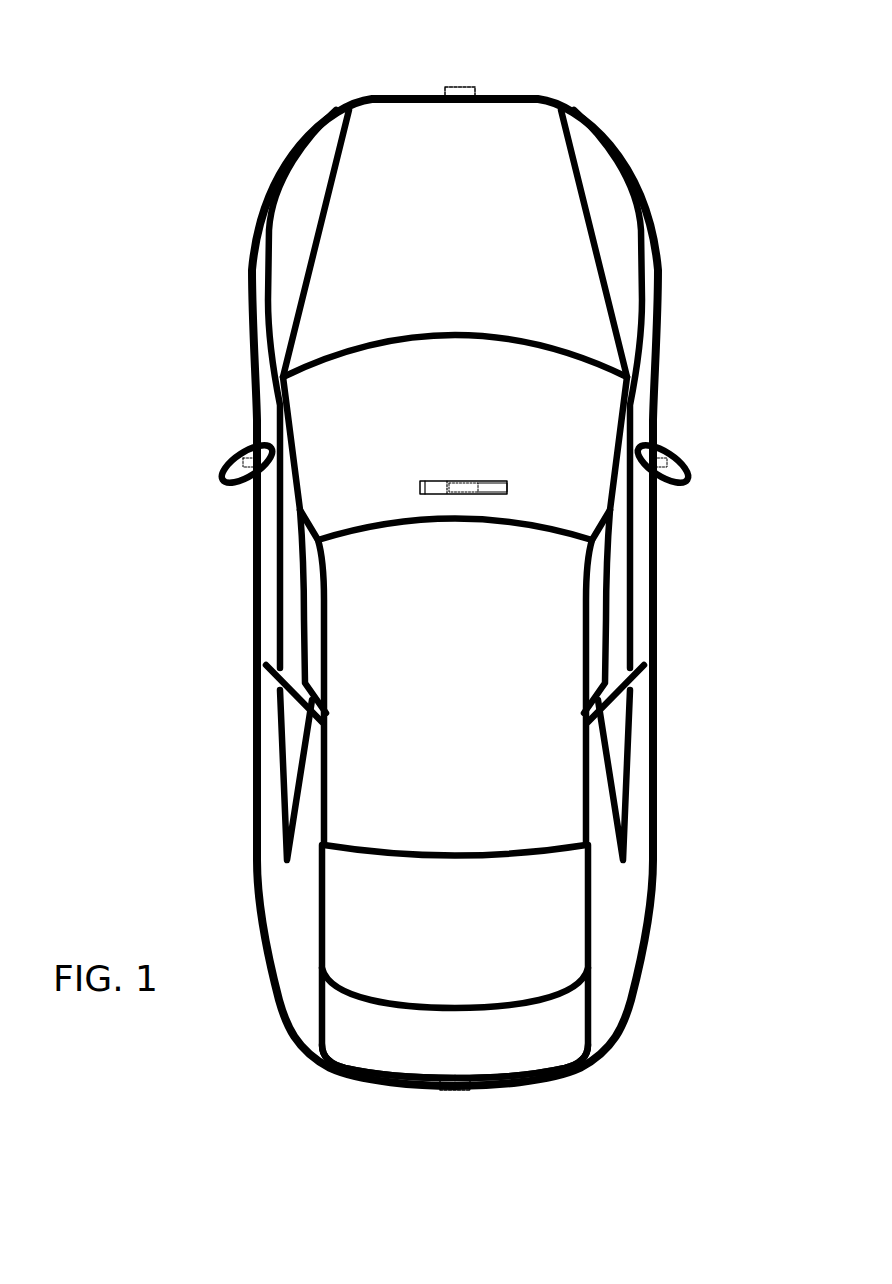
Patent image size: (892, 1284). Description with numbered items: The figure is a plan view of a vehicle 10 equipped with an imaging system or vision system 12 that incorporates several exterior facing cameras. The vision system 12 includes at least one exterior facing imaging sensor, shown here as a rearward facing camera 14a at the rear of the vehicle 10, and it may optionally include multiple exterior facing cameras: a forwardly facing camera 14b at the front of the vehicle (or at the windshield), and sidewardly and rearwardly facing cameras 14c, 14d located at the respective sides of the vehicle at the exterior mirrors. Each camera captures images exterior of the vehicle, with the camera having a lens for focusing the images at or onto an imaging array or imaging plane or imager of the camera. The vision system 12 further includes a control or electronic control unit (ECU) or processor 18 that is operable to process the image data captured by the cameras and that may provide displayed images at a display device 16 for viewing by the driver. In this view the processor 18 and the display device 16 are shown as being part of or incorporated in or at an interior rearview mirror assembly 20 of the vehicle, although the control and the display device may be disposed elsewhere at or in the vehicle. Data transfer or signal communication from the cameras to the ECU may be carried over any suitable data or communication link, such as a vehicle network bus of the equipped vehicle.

The vehicle 10 is at (203, 190).
The vision system 12 is at (403, 1112).
The rearward facing camera 14a is at (458, 1090).
The forwardly facing camera 14b is at (463, 86).
The sidewardly/rearwardly facing camera 14c is at (240, 460).
The sidewardly/rearwardly facing camera 14d is at (660, 460).
The display device 16 is at (437, 483).
The electronic control unit 18 is at (460, 475).
The interior rearview mirror assembly 20 is at (507, 481).